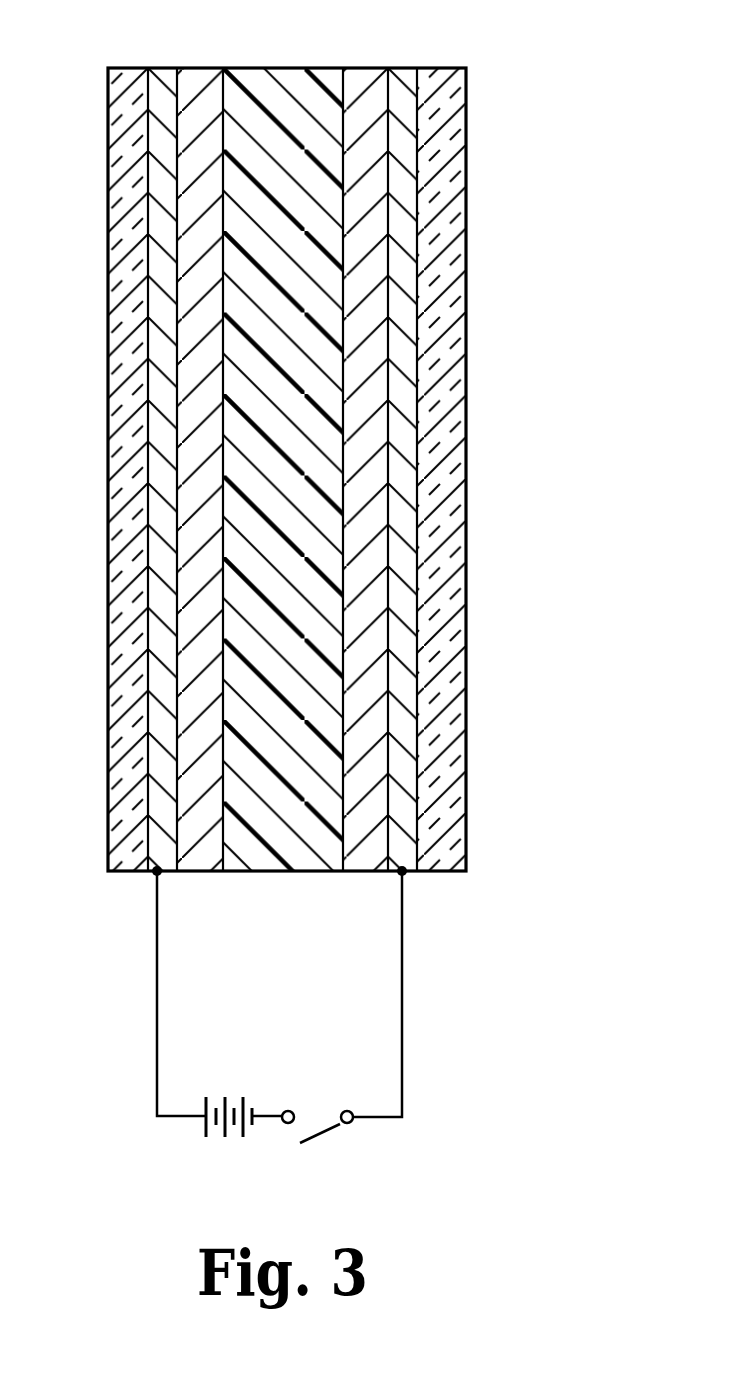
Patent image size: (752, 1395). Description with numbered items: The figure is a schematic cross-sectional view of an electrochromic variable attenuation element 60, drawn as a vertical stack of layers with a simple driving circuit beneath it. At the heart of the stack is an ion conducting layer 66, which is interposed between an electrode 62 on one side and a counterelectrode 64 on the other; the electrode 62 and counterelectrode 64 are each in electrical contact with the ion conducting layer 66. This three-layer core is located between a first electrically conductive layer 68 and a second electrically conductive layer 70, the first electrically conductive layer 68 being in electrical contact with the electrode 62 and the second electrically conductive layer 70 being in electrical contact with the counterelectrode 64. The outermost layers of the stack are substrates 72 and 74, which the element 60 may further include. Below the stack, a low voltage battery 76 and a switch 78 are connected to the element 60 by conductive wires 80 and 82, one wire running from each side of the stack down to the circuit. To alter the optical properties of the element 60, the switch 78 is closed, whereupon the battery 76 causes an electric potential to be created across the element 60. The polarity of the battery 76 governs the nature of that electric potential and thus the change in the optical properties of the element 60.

The electrochromic variable attenuation element 60 is at (333, 467).
The electrode 62 is at (197, 855).
The counterelectrode 64 is at (363, 857).
The ion conducting layer 66 is at (277, 94).
The first electrically conductive layer 68 is at (162, 84).
The second electrically conductive layer 70 is at (403, 80).
The substrate 72 is at (437, 776).
The substrate 74 is at (126, 845).
The low voltage battery 76 is at (206, 1127).
The switch 78 is at (322, 1128).
The conductive wire 80 is at (157, 1013).
The conductive wire 82 is at (403, 1003).